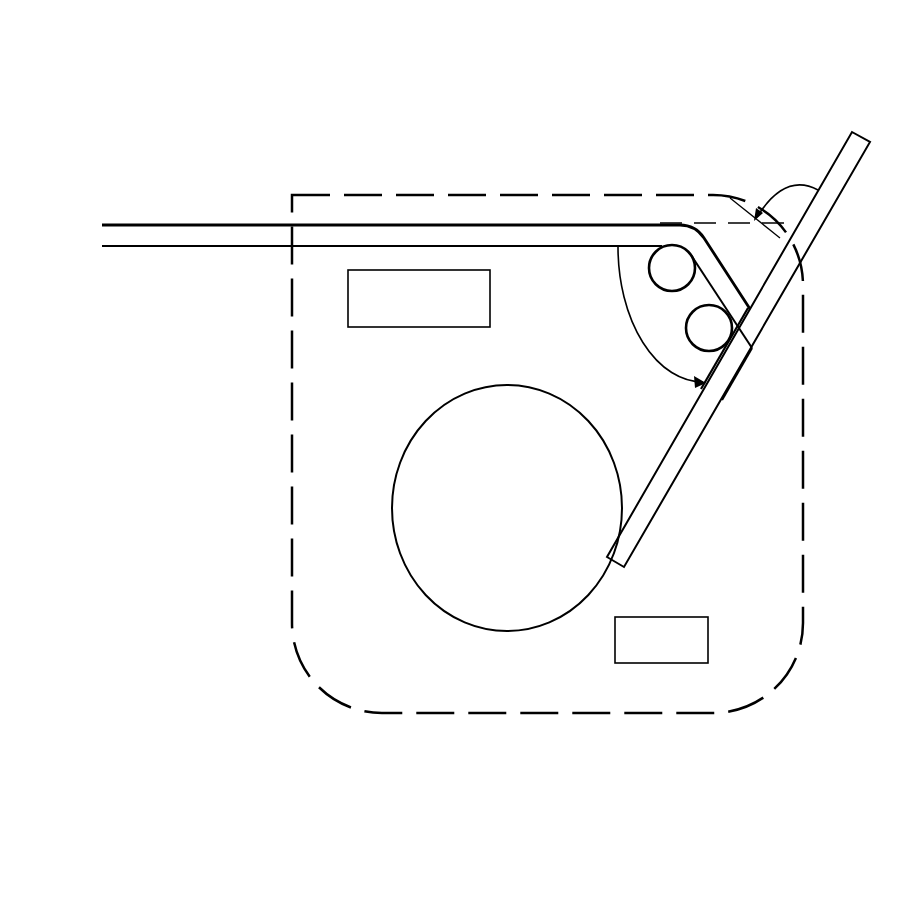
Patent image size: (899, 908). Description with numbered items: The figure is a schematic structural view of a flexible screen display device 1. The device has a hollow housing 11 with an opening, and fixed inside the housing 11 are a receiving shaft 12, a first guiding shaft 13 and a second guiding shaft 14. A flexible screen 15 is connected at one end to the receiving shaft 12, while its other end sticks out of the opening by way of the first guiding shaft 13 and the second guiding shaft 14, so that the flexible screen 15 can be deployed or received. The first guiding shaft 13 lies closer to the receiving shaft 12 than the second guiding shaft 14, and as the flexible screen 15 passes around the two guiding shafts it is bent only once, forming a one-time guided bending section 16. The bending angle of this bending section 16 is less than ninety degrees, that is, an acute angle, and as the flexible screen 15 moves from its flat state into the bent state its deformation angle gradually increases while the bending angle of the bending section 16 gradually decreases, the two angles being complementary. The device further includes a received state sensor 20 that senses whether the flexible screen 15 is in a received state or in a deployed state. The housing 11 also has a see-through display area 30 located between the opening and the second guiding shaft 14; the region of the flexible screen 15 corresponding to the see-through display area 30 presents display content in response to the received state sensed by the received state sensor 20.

The flexible screen display device 1 is at (843, 42).
The housing 11 is at (503, 190).
The receiving shaft 12 is at (410, 515).
The first guiding shaft 13 is at (716, 340).
The second guiding shaft 14 is at (669, 252).
The flexible screen 15 is at (150, 225).
The bending section 16 is at (730, 300).
The received state sensor 20 is at (661, 640).
The see-through display area 30 is at (419, 298).